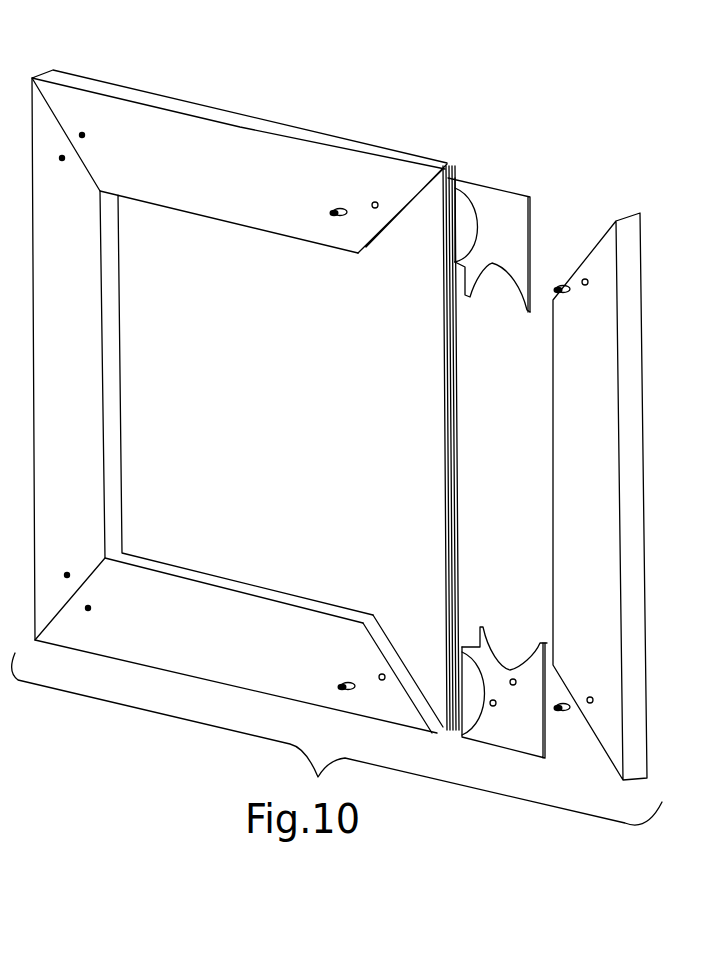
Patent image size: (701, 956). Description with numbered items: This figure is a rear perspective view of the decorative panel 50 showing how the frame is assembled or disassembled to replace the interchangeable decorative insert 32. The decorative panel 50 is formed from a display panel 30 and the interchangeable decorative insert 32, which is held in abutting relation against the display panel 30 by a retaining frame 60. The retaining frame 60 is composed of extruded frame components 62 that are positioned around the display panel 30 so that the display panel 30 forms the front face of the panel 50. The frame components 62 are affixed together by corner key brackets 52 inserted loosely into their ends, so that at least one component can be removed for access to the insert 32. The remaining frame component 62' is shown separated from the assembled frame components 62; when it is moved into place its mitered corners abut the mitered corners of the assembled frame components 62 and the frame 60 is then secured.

The retaining frame 60 is at (348, 120).
The frame component 62 is at (217, 411).
The remaining frame component 62' is at (626, 469).
The interchangeable decorative insert 32 is at (285, 418).
The decorative panel 50 is at (507, 146).
The corner key bracket 52 is at (515, 213).
The display panel 30 is at (457, 383).